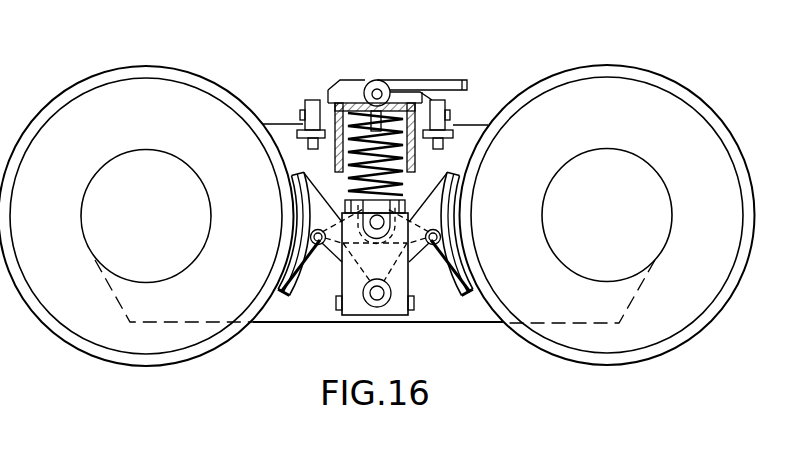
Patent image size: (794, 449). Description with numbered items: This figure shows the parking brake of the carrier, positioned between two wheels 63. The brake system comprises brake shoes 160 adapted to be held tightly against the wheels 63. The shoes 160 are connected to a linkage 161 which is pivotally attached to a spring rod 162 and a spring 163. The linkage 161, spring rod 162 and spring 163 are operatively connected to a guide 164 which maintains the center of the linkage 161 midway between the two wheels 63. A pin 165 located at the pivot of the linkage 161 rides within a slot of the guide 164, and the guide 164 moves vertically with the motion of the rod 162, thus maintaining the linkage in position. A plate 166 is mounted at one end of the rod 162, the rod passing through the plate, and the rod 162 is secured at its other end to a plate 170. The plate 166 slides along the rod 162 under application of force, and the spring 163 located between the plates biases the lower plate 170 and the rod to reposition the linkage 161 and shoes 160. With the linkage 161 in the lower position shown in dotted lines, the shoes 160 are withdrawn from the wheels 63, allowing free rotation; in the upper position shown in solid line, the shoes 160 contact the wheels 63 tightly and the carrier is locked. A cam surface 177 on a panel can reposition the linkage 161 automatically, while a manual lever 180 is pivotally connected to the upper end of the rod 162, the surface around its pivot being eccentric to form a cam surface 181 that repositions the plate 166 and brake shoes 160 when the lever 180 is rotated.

The wheel 63 is at (585, 132).
The brake shoe 160 is at (288, 296).
The linkage 161 is at (375, 295).
The spring rod 162 is at (391, 98).
The spring 163 is at (303, 147).
The guide 164 is at (370, 316).
The pin 165 is at (408, 216).
The plate 166 is at (430, 112).
The plate 170 is at (348, 190).
The cam surface 177 is at (302, 57).
The lever 180 is at (433, 80).
The cam surface 181 is at (347, 90).